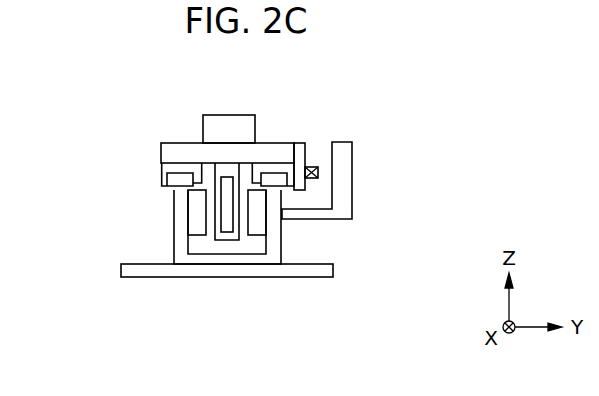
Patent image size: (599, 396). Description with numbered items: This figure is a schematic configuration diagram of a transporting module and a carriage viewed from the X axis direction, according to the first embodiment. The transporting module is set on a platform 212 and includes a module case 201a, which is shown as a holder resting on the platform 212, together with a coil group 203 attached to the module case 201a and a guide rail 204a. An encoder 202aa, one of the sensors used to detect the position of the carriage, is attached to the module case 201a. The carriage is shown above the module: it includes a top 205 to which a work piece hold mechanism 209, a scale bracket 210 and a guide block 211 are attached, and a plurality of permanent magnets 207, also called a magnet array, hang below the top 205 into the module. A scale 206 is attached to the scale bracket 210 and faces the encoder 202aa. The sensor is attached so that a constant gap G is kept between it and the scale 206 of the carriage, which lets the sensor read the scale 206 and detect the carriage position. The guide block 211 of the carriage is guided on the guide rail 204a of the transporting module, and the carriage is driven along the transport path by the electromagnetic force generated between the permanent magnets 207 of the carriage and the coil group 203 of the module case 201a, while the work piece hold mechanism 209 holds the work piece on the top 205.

The module case 201a is at (286, 244).
The encoder 202aa is at (350, 194).
The coil group 203 is at (207, 235).
The guide rail 204a is at (168, 184).
The top 205 is at (161, 153).
The scale 206 is at (320, 176).
The permanent magnets 207 is at (225, 209).
The work piece hold mechanism 209 is at (202, 121).
The scale bracket 210 is at (306, 150).
The guide block 211 is at (162, 169).
The platform 212 is at (334, 269).
The gap G is at (323, 170).